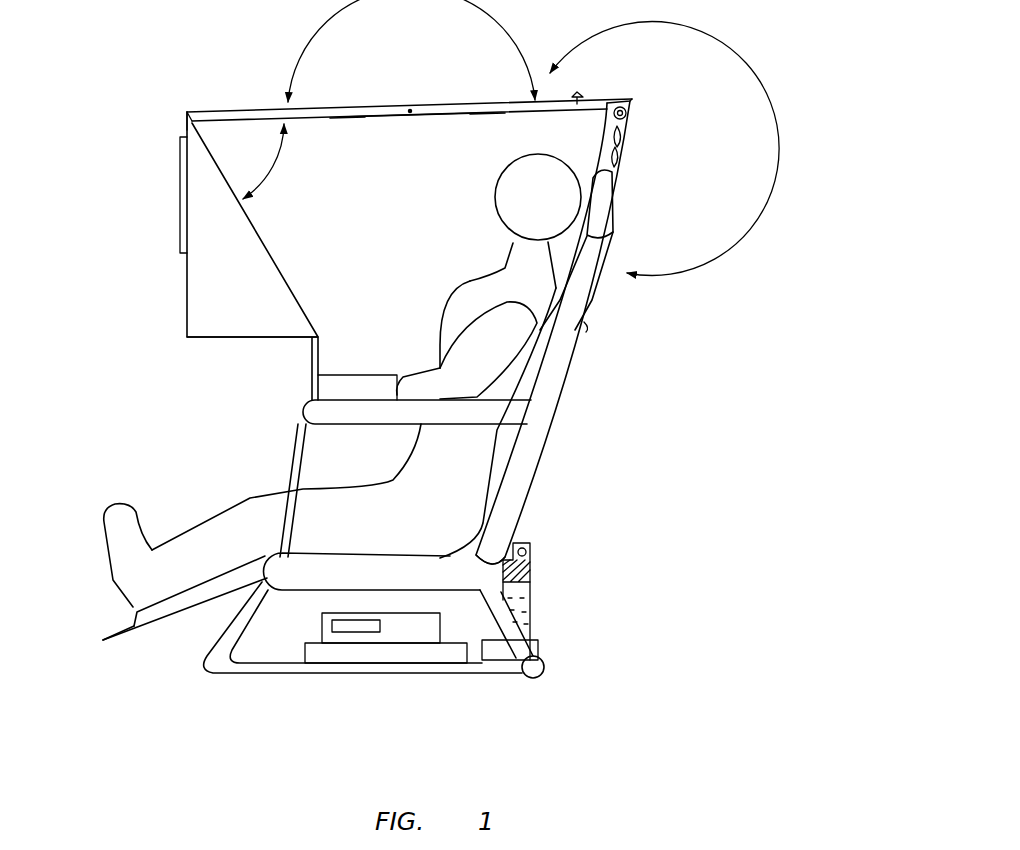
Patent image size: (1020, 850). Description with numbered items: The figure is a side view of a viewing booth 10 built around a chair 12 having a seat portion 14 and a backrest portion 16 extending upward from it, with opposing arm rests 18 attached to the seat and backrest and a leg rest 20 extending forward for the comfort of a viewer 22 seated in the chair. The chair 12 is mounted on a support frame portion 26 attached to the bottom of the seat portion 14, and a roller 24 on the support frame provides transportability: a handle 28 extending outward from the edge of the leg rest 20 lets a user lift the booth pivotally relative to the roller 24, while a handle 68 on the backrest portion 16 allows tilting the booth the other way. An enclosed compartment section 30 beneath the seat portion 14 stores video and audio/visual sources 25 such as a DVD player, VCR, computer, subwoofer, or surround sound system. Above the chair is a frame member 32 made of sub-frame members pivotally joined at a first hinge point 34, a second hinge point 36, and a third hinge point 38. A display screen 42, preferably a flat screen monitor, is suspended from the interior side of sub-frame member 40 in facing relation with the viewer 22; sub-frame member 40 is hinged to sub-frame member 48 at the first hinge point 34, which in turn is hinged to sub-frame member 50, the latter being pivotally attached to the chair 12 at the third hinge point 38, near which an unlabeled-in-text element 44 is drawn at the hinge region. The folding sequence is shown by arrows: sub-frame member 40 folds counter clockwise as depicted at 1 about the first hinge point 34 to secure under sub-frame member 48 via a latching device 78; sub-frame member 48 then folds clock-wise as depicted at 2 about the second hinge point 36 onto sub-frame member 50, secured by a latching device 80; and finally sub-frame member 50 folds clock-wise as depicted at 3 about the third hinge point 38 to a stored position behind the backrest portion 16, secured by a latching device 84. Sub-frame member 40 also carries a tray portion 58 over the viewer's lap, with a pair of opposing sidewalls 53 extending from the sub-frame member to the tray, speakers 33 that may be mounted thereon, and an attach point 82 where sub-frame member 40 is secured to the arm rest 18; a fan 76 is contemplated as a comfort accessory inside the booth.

The counter clockwise folding direction 1 is at (270, 172).
The clock-wise folding direction 2 is at (416, 0).
The clock-wise folding direction 3 is at (785, 145).
The viewing booth 10 is at (740, 388).
The chair 12 is at (530, 510).
The seat portion 14 is at (388, 560).
The backrest portion 16 is at (540, 465).
The arm rests 18 is at (303, 427).
The leg rest 20 is at (170, 626).
The viewer 22 is at (458, 287).
The roller 24 is at (547, 667).
The video and audio/visual sources 25 is at (323, 630).
The support frame portion 26 is at (273, 673).
The handle 28 is at (112, 643).
The enclosed compartment section 30 is at (441, 626).
The frame member 32 is at (262, 108).
The speakers 33 is at (532, 562).
The first hinge point 34 is at (188, 112).
The second hinge point 36 is at (410, 111).
The third hinge point 38 is at (630, 105).
The sub-frame member 40 is at (186, 294).
The display screen 42 is at (188, 223).
The pivot bolt 44 is at (628, 120).
The sub-frame member 48 is at (348, 122).
The sub-frame member 50 is at (487, 115).
The sidewalls 53 is at (225, 330).
The tray portion 58 is at (330, 384).
The handle 68 is at (620, 100).
The fan 76 is at (627, 147).
The latching device 78 is at (396, 121).
The latching device 80 is at (580, 97).
The attach point 82 is at (302, 404).
The latching device 84 is at (586, 325).